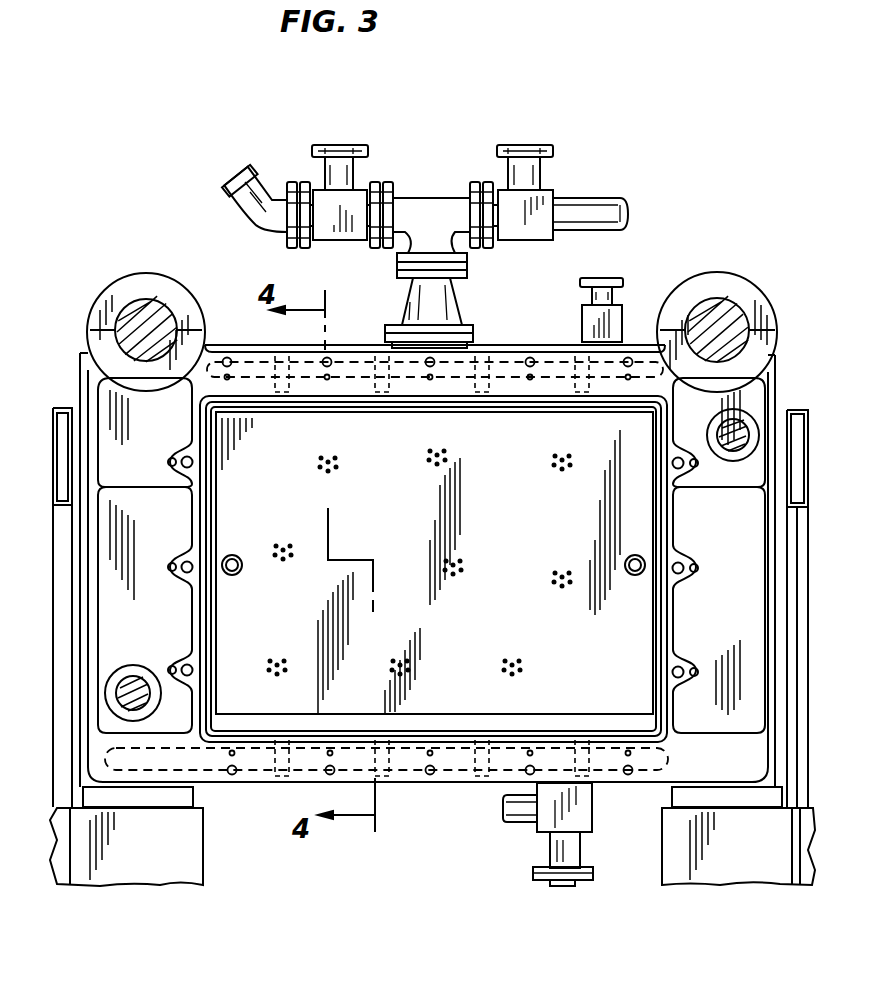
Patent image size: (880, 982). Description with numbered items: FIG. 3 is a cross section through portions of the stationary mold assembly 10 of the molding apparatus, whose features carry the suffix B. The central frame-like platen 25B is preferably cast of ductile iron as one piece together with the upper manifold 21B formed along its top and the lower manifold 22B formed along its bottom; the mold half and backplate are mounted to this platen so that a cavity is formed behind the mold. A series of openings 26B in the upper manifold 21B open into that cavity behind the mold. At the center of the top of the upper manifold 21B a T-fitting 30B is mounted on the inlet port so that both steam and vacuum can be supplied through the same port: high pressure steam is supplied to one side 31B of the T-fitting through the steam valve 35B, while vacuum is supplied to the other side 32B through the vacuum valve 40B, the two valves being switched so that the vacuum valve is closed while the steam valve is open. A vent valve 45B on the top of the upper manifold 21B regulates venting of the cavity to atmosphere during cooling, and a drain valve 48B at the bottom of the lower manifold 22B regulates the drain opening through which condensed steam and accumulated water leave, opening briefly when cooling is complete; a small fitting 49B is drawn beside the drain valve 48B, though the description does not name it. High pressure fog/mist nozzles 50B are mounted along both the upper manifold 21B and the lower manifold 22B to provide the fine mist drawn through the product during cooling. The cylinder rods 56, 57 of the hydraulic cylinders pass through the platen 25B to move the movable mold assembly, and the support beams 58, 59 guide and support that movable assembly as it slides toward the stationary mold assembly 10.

The stationary mold assembly 10 is at (786, 405).
The upper manifold 21B is at (340, 362).
The lower manifold 22B is at (409, 768).
The platen 25B is at (530, 345).
The openings 26B is at (365, 414).
The T-fitting 30B is at (420, 212).
The steam side of T-fitting 31B is at (386, 182).
The vacuum side of T-fitting 32B is at (478, 182).
The steam valve 35B is at (330, 240).
The vacuum valve 40B is at (520, 240).
The vent valve 45B is at (600, 322).
The drain valve 48B is at (585, 815).
The drain fitting 49B is at (510, 822).
The fog/mist nozzles 50B is at (275, 358).
The cylinder rod 56 is at (735, 450).
The cylinder rod 57 is at (127, 690).
The support beam 58 is at (712, 325).
The support beam 59 is at (148, 325).